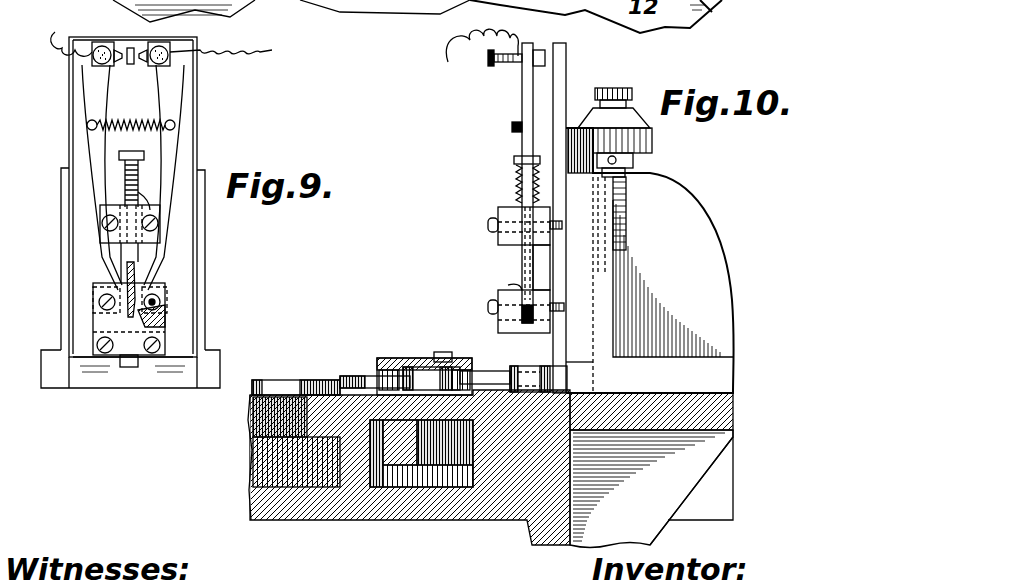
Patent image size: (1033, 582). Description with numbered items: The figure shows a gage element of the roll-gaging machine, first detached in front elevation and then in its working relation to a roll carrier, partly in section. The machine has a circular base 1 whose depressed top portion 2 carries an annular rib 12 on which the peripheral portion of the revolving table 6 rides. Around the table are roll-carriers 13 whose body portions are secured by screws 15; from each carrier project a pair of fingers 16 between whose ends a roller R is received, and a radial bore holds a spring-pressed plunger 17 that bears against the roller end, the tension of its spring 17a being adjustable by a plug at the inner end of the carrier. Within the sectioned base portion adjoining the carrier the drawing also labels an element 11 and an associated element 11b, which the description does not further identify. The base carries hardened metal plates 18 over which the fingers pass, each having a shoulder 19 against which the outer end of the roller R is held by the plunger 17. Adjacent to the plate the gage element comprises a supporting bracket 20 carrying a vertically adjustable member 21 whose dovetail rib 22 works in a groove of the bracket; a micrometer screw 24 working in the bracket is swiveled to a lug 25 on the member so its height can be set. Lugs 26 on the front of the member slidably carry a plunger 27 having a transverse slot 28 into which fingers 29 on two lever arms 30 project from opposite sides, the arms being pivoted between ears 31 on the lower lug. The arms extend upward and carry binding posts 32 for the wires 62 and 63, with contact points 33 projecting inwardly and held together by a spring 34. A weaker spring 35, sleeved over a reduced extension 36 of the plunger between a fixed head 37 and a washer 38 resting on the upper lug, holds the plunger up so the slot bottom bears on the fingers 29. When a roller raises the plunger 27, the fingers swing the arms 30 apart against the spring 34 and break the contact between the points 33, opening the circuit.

In FIG. 10, the circular base 1 is at (705, 410).
In FIG. 10, the top portion 2 is at (362, 510).
In FIG. 10, the revolving table 6 is at (327, 420).
In FIG. 10, the plate 11 is at (256, 386).
In FIG. 10, the plate portion 11b is at (376, 372).
In FIG. 10, the annular flange or rib 12 is at (353, 463).
In FIG. 10, the roll-carrier 13 is at (438, 374).
In FIG. 10, the screw 15 is at (456, 367).
In FIG. 10, the finger 16 is at (486, 371).
In FIG. 10, the spring-pressed plunger 17 is at (513, 368).
In FIG. 10, the spring 17a is at (397, 368).
In FIG. 10, the hardened metal plate 18 is at (573, 447).
In FIG. 10, the shoulder 19 is at (572, 391).
In FIG. 9, the supporting bracket 20 is at (95, 372).
In FIG. 10, the supporting bracket 20 is at (588, 296).
In FIG. 9, the vertically adjustable member 21 is at (187, 104).
In FIG. 10, the vertically adjustable member 21 is at (568, 73).
In FIG. 10, the dovetail rib 22 is at (627, 192).
In FIG. 10, the micrometer screw 24 is at (626, 166).
In FIG. 10, the lug 25 is at (642, 143).
In FIG. 9, the lug 26 is at (110, 210).
In FIG. 10, the lug 26 is at (523, 215).
In FIG. 9, the plunger 27 is at (136, 266).
In FIG. 10, the plunger 27 is at (525, 253).
In FIG. 9, the transverse slot 28 is at (146, 292).
In FIG. 9, the finger 29 is at (128, 320).
In FIG. 9, the lever arm 30 is at (80, 155).
In FIG. 10, the lever arm 30 is at (523, 105).
In FIG. 9, the ear or lug 31 is at (99, 290).
In FIG. 10, the ear or lug 31 is at (508, 286).
In FIG. 9, the binding post 32 is at (96, 63).
In FIG. 10, the binding post 32 is at (510, 66).
In FIG. 9, the contact point 33 is at (132, 64).
In FIG. 9, the spring 34 is at (136, 121).
In FIG. 10, the spring 34 is at (514, 130).
In FIG. 9, the spring 35 is at (127, 170).
In FIG. 10, the spring 35 is at (518, 178).
In FIG. 9, the reduced extension 36 is at (138, 190).
In FIG. 9, the head 37 is at (133, 151).
In FIG. 10, the head 37 is at (514, 160).
In FIG. 9, the washer 38 is at (145, 193).
In FIG. 10, the washer 38 is at (520, 196).
In FIG. 9, the wire 62 is at (272, 52).
In FIG. 10, the wire 62 is at (452, 62).
In FIG. 9, the wire 63 is at (66, 33).
In FIG. 10, the roller R is at (547, 392).